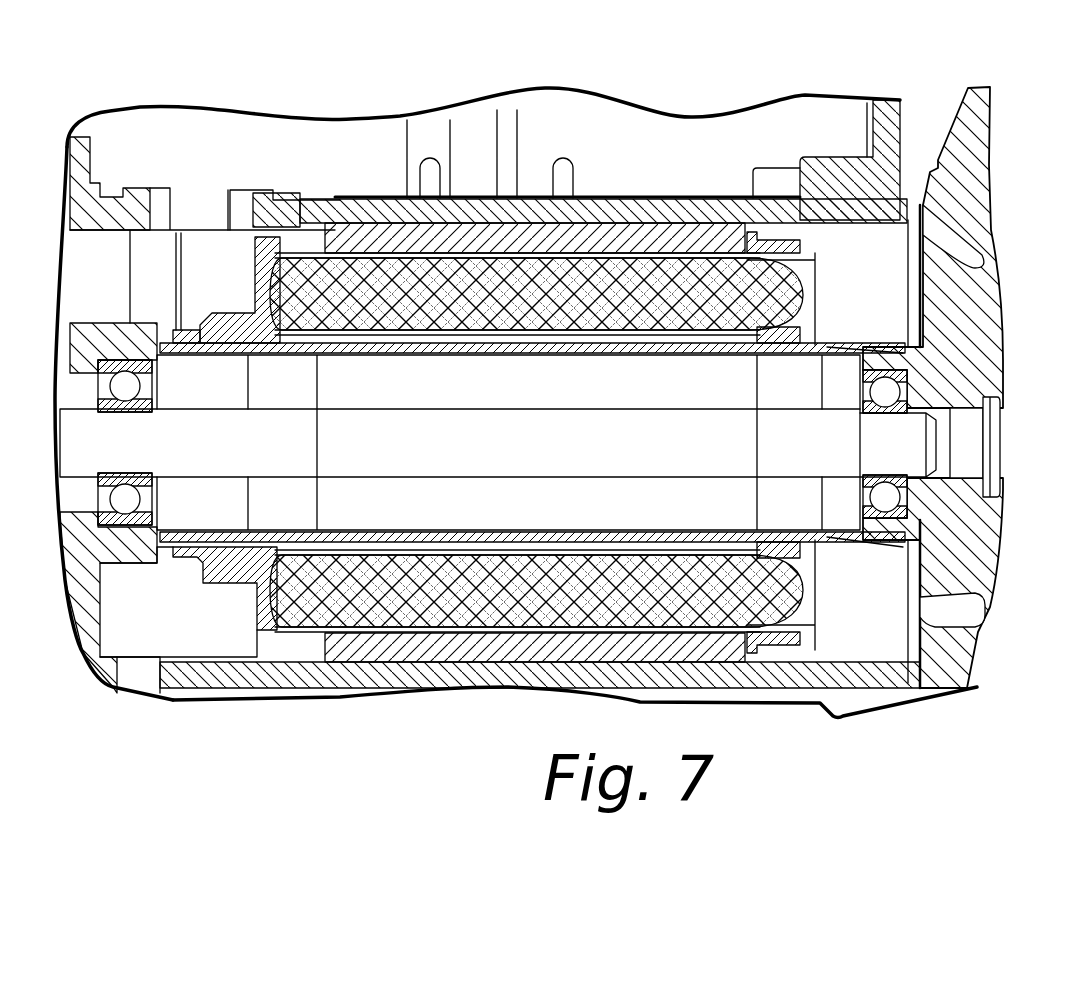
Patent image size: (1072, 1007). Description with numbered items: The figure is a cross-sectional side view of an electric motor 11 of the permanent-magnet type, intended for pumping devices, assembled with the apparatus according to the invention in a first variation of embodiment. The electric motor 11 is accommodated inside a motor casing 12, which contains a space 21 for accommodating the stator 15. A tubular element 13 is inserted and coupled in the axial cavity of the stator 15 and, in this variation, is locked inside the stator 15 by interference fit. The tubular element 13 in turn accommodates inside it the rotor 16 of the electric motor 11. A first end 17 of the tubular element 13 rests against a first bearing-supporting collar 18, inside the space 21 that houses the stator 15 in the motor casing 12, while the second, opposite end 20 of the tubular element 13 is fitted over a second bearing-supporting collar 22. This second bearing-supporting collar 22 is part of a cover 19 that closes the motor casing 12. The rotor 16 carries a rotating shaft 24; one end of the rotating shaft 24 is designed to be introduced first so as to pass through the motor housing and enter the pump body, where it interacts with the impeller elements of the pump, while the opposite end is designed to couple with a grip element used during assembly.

The electric motor 11 is at (640, 192).
The motor casing 12 is at (248, 192).
The tubular element 13 is at (450, 343).
The stator 15 is at (530, 256).
The rotor 16 is at (412, 367).
The first end 17 is at (178, 333).
The first bearing-supporting collar 18 is at (97, 323).
The cover 19 is at (977, 347).
The second end 20 is at (870, 353).
The space 21 is at (183, 627).
The second bearing-supporting collar 22 is at (890, 360).
The rotating shaft 24 is at (273, 443).